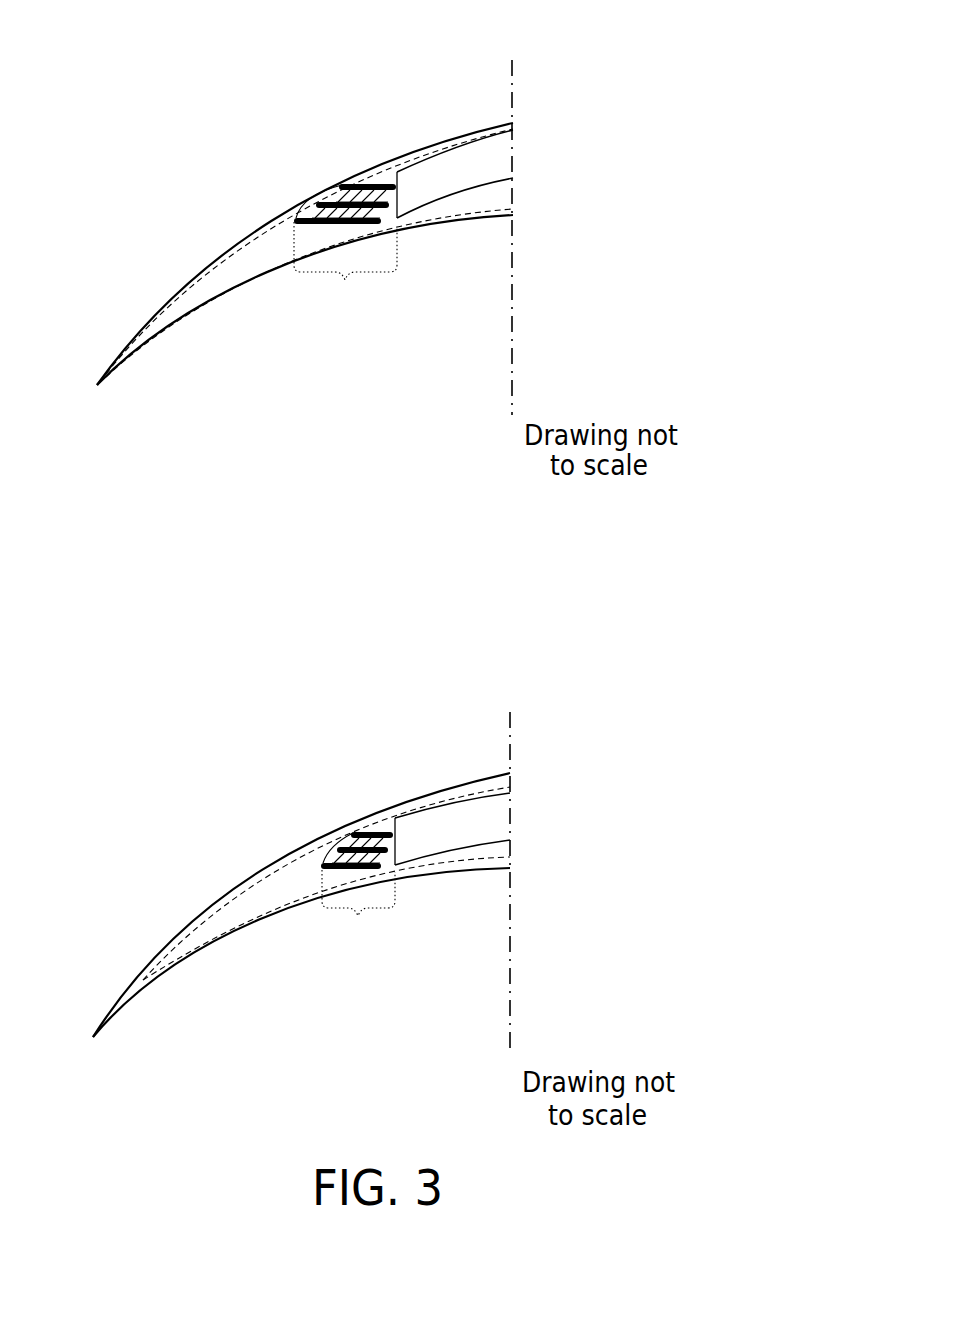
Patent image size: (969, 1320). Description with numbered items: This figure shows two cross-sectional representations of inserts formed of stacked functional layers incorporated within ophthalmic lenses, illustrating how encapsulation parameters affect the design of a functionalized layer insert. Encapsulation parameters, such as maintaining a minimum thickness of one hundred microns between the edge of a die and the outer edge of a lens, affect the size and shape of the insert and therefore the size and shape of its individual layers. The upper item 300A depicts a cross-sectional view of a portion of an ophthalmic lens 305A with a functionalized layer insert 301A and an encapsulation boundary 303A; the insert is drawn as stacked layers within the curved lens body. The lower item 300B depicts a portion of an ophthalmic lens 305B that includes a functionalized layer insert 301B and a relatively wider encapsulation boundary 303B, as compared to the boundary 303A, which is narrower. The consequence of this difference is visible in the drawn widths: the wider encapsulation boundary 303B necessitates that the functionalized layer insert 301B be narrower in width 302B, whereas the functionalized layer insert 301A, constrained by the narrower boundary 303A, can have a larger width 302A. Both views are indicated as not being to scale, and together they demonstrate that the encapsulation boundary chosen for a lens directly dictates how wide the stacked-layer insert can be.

The item depicting cross-sectional view of ophthalmic lens portion 300A is at (212, 210).
The functionalized layer insert 301A is at (368, 178).
The width of functionalized layer insert 302A is at (341, 289).
The encapsulation boundary 303A is at (198, 293).
The ophthalmic lens 305A is at (483, 118).
The item depicting cross-sectional view of ophthalmic lens portion 300B is at (230, 820).
The functionalized layer insert 301B is at (375, 822).
The width of functionalized layer insert 302B is at (351, 927).
The encapsulation boundary 303B is at (223, 927).
The ophthalmic lens 305B is at (460, 782).